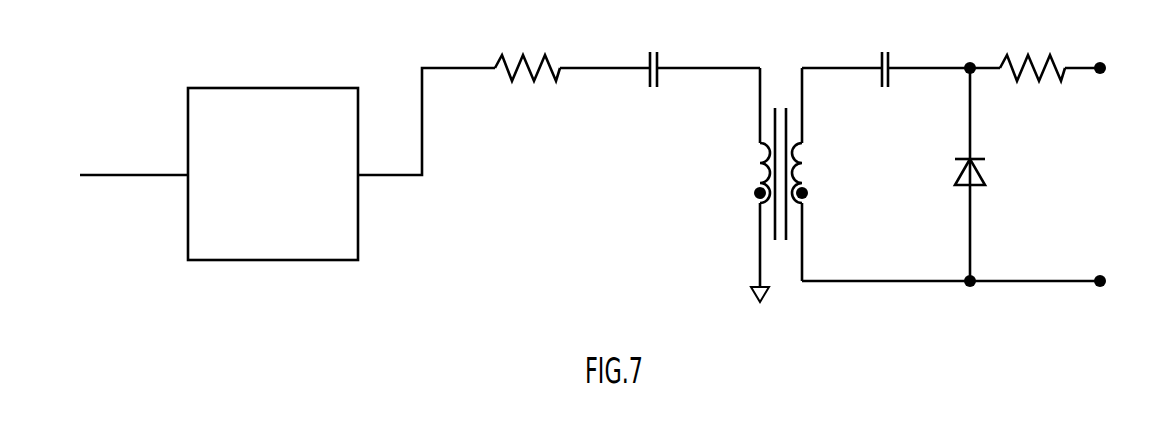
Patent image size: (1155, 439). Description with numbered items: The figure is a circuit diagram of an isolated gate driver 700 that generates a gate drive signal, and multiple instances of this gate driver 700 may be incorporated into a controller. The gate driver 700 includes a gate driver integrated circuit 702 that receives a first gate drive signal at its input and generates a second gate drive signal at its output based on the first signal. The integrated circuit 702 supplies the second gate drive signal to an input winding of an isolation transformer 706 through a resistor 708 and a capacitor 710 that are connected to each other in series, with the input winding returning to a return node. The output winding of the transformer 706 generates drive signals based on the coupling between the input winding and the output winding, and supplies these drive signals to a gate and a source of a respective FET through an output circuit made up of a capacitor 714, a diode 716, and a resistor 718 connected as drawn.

The isolated gate driver 700 is at (99, 87).
The gate driver integrated circuit 702 is at (278, 260).
The isolation transformer 706 is at (738, 180).
The resistor 708 is at (551, 68).
The capacitor 710 is at (661, 61).
The capacitor 714 is at (891, 62).
The diode 716 is at (986, 178).
The resistor 718 is at (1062, 62).